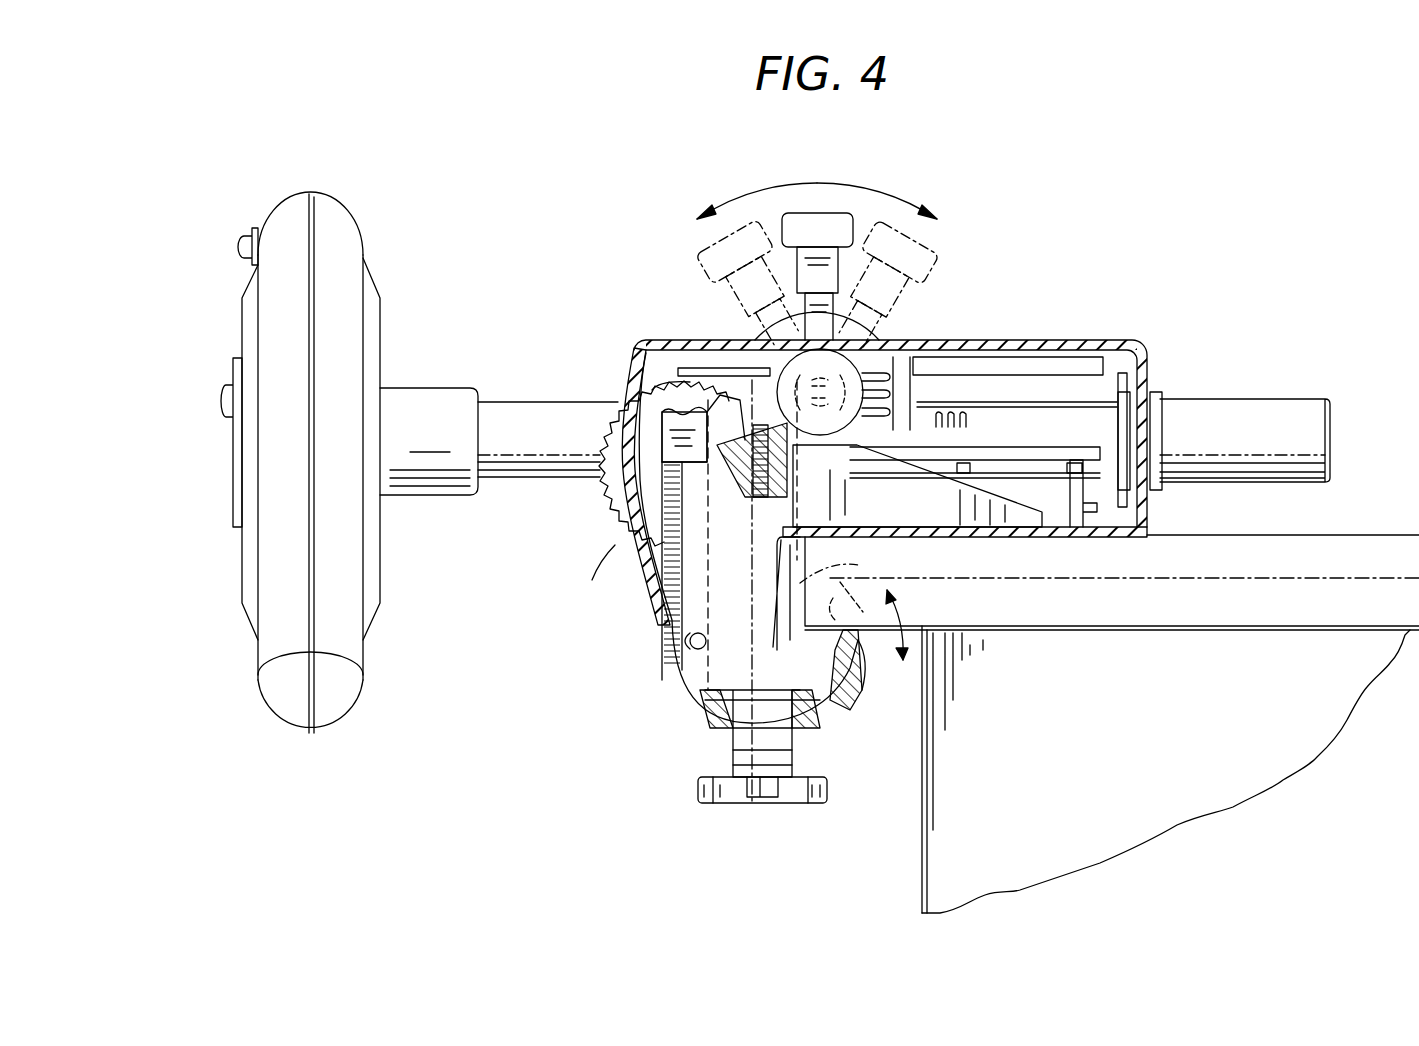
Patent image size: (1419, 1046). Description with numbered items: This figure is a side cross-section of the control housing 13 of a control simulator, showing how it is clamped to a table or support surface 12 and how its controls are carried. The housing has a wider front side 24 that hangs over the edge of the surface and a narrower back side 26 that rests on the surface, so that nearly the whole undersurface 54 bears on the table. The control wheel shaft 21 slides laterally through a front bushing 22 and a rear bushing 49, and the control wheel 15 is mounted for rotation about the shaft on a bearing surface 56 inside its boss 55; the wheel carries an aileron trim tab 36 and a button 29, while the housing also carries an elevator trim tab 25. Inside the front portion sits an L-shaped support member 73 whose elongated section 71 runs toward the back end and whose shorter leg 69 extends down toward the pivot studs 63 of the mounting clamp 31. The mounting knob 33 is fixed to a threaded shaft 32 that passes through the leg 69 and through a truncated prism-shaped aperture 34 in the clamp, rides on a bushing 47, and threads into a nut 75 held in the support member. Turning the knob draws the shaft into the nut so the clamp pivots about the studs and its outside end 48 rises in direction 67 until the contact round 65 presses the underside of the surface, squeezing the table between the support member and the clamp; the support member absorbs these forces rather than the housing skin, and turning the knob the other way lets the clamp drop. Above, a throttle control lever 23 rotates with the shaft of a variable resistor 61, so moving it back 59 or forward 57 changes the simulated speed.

The support surface 12 is at (1190, 535).
The control housing 13 is at (1055, 340).
The control wheel 15 is at (352, 214).
The control wheel shaft 21 is at (553, 487).
The bushing 22 is at (630, 395).
The throttle control lever 23 is at (823, 222).
The front side 24 is at (655, 640).
The elevator trim tab 25 is at (614, 547).
The back side 26 is at (1148, 346).
The button 29 is at (240, 247).
The mounting clamp 31 is at (700, 714).
The threaded shaft 32 is at (763, 718).
The mounting knob 33 is at (796, 803).
The truncated prism-shaped aperture 34 is at (735, 729).
The aileron trim tab 36 is at (223, 403).
The bushing 47 is at (733, 742).
The outside end 48 is at (862, 690).
The bushing 49 is at (1165, 390).
The undersurface 54 is at (1025, 537).
The boss 55 is at (412, 388).
The bearing surface 56 is at (842, 571).
The forward direction 57 is at (885, 193).
The back direction 59 is at (790, 184).
The variable resistor 61 is at (852, 350).
The pivot studs 63 is at (677, 646).
The contact round 65 is at (870, 640).
The direction 67 is at (905, 613).
The shorter leg 69 is at (690, 575).
The elongated section 71 is at (990, 505).
The support member 73 is at (735, 445).
The nut 75 is at (760, 430).